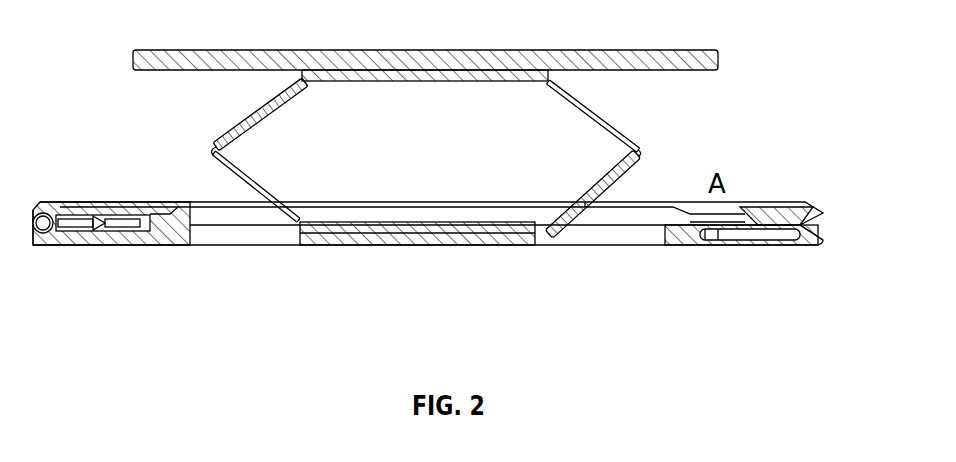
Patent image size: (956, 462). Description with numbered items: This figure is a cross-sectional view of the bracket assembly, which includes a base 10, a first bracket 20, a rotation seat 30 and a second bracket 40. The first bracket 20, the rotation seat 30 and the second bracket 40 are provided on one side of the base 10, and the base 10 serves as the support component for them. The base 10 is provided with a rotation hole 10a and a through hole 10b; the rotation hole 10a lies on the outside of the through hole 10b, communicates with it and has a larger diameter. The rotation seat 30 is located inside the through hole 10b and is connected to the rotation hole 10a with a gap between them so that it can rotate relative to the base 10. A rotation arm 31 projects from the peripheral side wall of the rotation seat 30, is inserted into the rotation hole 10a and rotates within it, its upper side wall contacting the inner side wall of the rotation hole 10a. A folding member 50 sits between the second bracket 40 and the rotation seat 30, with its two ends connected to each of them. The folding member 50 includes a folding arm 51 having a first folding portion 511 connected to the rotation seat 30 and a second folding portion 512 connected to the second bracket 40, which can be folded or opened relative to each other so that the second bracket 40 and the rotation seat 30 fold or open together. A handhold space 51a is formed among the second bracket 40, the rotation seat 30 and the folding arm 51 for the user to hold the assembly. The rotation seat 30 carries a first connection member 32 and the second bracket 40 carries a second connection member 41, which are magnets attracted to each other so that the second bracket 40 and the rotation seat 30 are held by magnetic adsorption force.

The base 10 is at (820, 240).
The rotation hole 10a is at (760, 247).
The through hole 10b is at (690, 246).
The first bracket 20 is at (797, 207).
The rotation seat 30 is at (263, 243).
The rotation arm 31 is at (700, 247).
The first connection member 32 is at (497, 245).
The second bracket 40 is at (688, 56).
The second connection member 41 is at (414, 50).
The folding member 50 is at (590, 203).
The folding arm 51 is at (704, 159).
The handhold space 51a is at (400, 178).
The first folding portion 511 is at (615, 174).
The second folding portion 512 is at (603, 122).